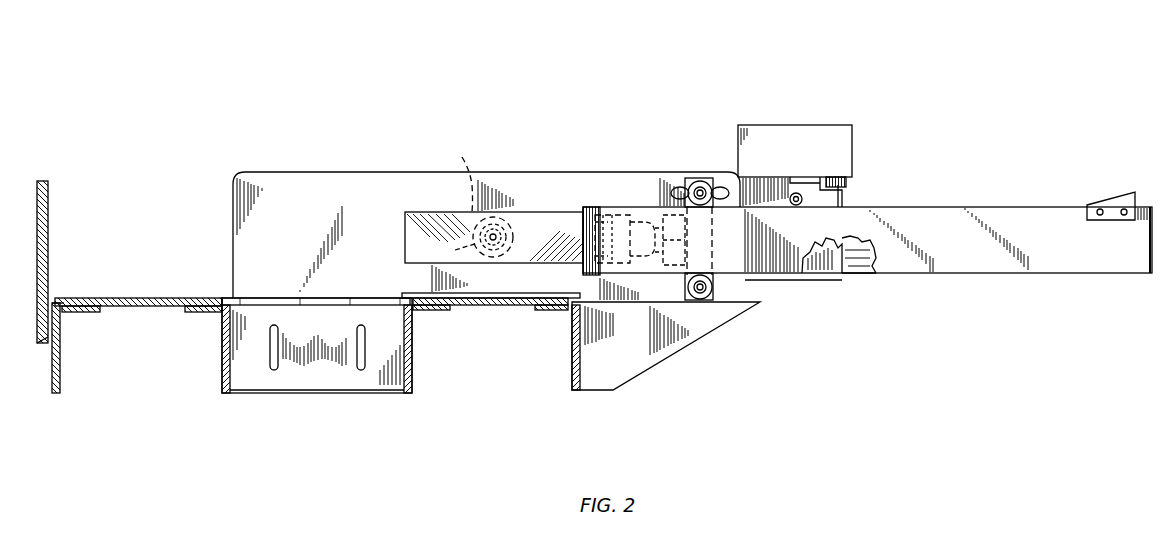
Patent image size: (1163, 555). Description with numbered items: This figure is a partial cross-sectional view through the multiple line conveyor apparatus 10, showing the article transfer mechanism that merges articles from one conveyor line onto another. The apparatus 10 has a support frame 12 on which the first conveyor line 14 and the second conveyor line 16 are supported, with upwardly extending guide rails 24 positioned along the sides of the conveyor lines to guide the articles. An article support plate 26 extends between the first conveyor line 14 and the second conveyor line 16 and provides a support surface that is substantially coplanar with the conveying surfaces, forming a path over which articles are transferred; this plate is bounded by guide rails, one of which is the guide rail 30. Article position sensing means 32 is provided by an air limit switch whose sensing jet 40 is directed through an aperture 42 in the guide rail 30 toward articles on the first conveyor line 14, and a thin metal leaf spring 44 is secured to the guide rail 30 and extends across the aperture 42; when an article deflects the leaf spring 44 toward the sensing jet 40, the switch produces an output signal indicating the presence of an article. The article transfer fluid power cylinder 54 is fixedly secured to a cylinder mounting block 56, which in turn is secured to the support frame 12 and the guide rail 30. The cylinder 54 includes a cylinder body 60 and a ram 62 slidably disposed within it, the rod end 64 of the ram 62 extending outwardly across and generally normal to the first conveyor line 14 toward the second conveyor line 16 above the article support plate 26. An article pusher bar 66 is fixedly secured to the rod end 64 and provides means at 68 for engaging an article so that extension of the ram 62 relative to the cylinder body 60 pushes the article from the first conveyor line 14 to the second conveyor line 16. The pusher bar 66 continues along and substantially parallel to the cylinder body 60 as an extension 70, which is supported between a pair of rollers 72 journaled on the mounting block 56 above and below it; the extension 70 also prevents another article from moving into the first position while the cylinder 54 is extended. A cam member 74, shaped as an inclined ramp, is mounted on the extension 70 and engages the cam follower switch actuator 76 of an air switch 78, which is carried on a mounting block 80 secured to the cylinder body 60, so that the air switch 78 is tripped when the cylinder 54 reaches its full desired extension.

The multiple line conveyor apparatus 10 is at (603, 83).
The support frame 12 is at (412, 355).
The first conveyor line 14 is at (500, 294).
The second conveyor line 16 is at (135, 298).
The guide rails 24 is at (49, 212).
The article support plate 26 is at (344, 298).
The guide rail 30 is at (598, 172).
The pivot axis 32 is at (456, 172).
The sensing jet 40 is at (502, 222).
The aperture 42 is at (453, 253).
The leaf spring 44 is at (425, 215).
The article transfer fluid power cylinder 54 is at (850, 278).
The cylinder mounting block 56 is at (706, 178).
The cylinder body 60 is at (864, 272).
The ram 62 is at (647, 265).
The rod end 64 is at (666, 334).
The article pusher bar 66 is at (632, 212).
The article engaging means 68 is at (583, 224).
The extension 70 is at (968, 267).
The rollers 72 is at (700, 178).
The cam member 74 is at (1122, 205).
The cam follower switch actuator 76 is at (802, 201).
The air switch 78 is at (834, 131).
The mounting block 80 is at (812, 276).